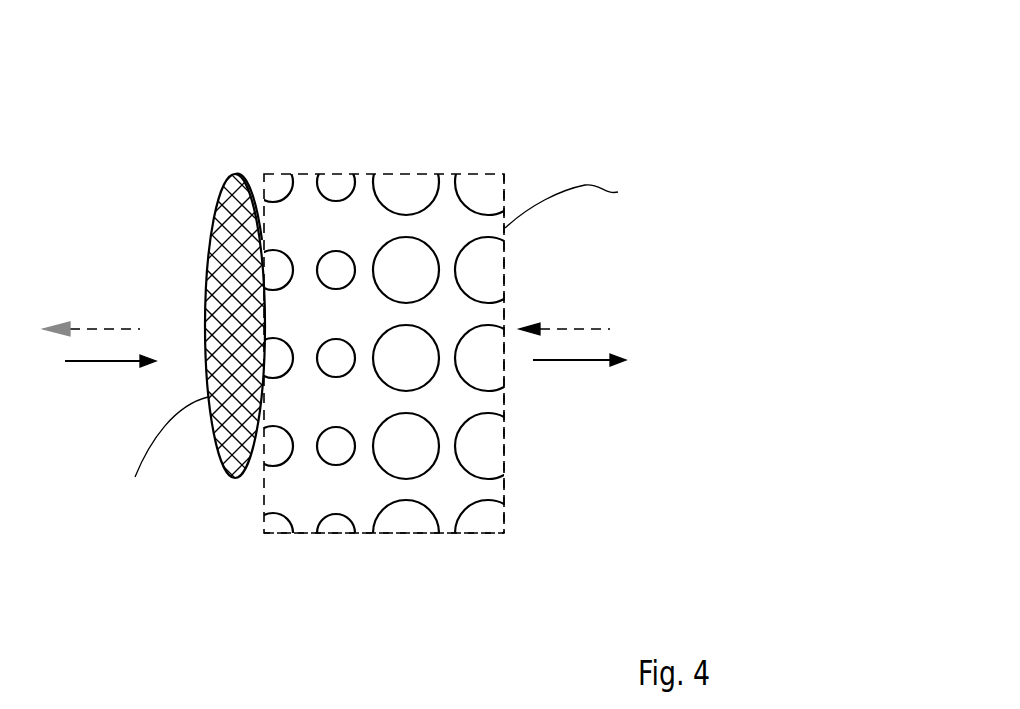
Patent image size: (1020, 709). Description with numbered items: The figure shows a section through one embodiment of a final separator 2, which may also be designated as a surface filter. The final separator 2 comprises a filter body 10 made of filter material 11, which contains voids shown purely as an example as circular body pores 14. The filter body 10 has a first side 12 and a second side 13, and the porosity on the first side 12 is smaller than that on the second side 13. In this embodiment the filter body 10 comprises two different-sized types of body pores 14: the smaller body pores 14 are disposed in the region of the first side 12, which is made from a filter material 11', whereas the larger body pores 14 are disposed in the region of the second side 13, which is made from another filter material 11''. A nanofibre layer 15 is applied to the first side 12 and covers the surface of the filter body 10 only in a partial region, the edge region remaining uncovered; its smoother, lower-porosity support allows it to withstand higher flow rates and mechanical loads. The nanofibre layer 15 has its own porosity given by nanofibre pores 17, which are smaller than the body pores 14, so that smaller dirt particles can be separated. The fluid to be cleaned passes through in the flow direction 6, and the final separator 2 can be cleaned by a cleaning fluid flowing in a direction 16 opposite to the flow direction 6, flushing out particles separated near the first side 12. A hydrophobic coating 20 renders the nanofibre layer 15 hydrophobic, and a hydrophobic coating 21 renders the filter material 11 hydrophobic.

The final separator 2 is at (568, 160).
The flow direction 6 is at (103, 364).
The filter body 10 is at (387, 334).
The filter material 11 is at (387, 357).
The filter material 11' is at (387, 182).
The other filter material 11'' is at (387, 533).
The first side 12 is at (263, 500).
The second side 13 is at (504, 490).
The body pores 14 is at (387, 358).
The nanofibre layer 15 is at (210, 240).
The direction 16 is at (102, 328).
The nanofibre pores 17 is at (240, 175).
The hydrophobic coating 20 is at (93, 516).
The hydrophobic coating 21 is at (638, 182).